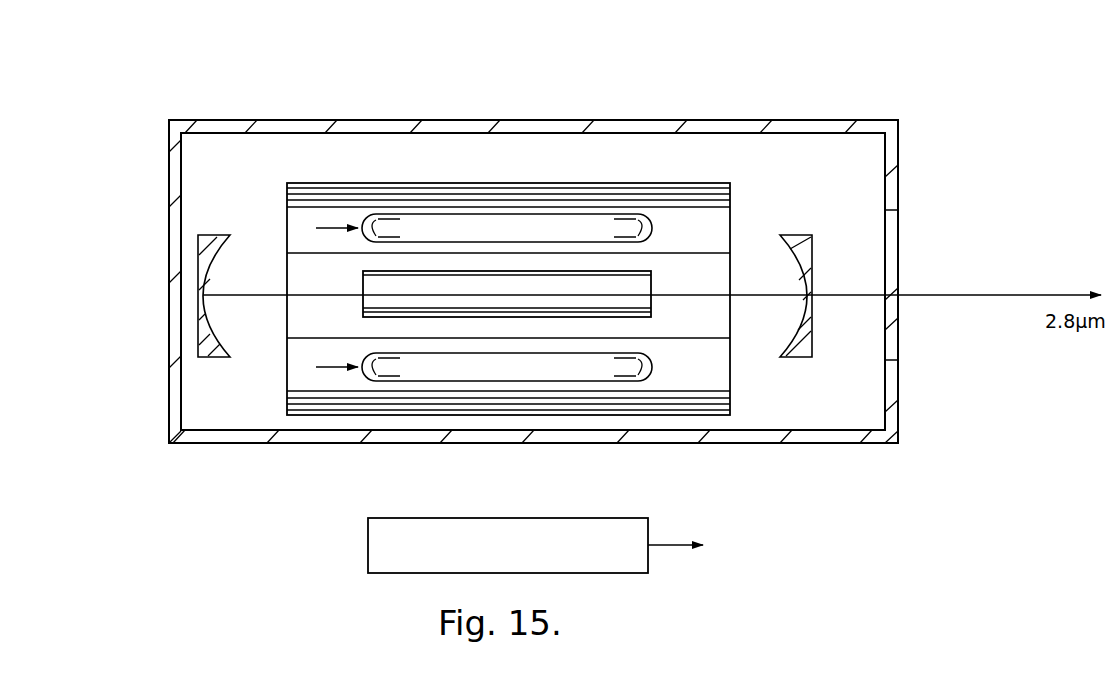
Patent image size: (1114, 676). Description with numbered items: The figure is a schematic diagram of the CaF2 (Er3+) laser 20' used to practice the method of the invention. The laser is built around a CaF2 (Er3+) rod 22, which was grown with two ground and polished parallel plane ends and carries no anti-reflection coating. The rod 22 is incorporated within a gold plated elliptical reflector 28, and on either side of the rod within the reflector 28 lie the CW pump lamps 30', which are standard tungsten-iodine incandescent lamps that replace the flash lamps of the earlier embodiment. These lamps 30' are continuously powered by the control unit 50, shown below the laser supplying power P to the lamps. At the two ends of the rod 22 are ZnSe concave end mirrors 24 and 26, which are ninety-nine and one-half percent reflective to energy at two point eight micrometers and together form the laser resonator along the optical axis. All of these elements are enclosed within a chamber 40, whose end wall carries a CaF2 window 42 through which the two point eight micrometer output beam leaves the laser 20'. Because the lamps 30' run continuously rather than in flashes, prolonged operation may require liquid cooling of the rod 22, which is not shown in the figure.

The laser 20' is at (533, 232).
The chamber 40 is at (236, 120).
The CaF2 window 42 is at (896, 242).
The ZnSe concave end mirror 24 is at (221, 235).
The ZnSe concave end mirror 26 is at (798, 235).
The gold plated elliptical reflector 28 is at (322, 183).
The CW pump lamp 30' is at (499, 297).
The CaF2 (Er3+) rod 22 is at (652, 271).
The control unit 50 is at (648, 518).